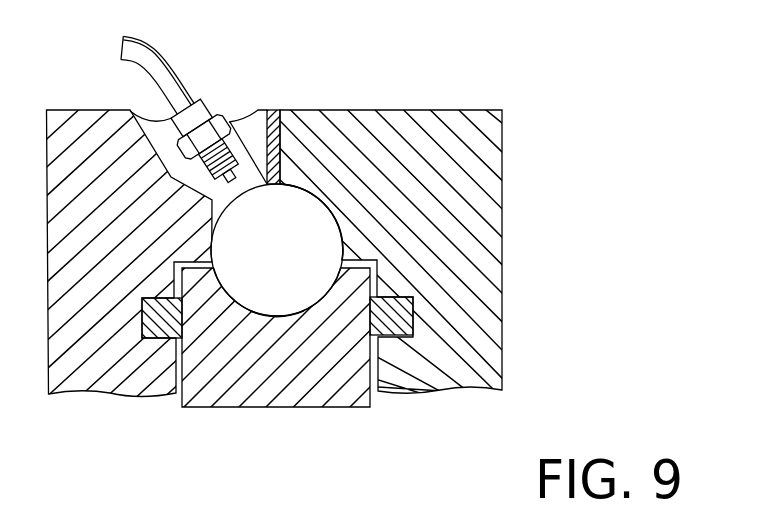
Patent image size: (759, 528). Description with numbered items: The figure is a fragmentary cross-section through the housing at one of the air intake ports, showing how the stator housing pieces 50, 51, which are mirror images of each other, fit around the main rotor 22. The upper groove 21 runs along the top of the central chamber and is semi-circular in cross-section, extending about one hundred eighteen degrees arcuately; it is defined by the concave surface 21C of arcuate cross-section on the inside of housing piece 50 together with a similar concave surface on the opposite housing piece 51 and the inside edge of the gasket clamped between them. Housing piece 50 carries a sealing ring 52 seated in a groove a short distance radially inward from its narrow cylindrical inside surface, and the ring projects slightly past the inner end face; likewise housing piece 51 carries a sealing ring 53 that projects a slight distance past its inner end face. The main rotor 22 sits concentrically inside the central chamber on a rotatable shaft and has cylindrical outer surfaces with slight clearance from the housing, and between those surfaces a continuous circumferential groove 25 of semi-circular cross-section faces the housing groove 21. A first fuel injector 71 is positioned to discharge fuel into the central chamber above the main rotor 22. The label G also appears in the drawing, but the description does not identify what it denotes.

The housing piece 50 is at (368, 125).
The housing piece 51 is at (88, 136).
The sealing ring 52 is at (398, 297).
The sealing ring 53 is at (148, 298).
The upper groove 21 is at (235, 198).
The concave surface 21C is at (327, 197).
The main rotor 22 is at (262, 407).
The circumferential groove 25 is at (268, 313).
The first fuel injector 71 is at (213, 110).
The gap G is at (270, 108).